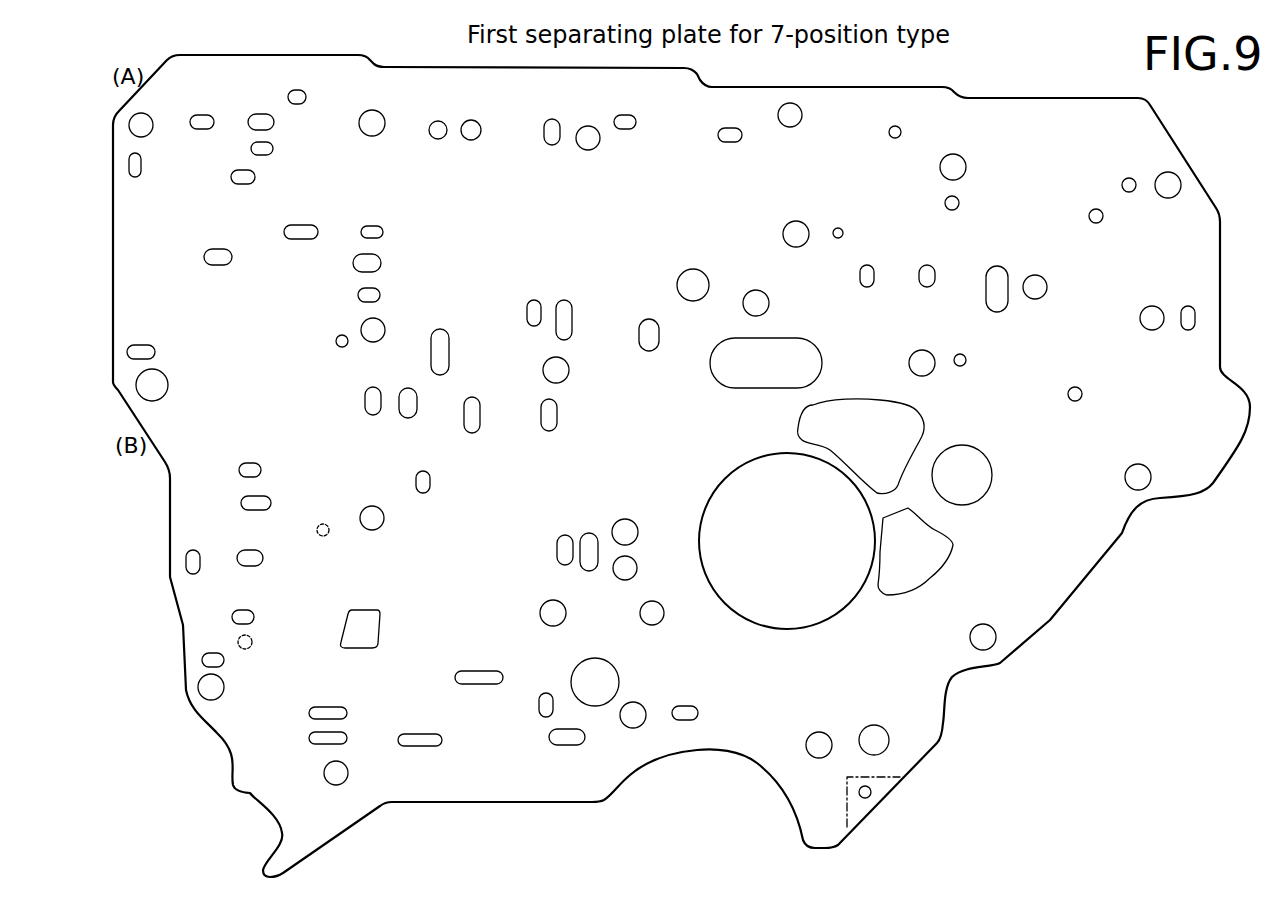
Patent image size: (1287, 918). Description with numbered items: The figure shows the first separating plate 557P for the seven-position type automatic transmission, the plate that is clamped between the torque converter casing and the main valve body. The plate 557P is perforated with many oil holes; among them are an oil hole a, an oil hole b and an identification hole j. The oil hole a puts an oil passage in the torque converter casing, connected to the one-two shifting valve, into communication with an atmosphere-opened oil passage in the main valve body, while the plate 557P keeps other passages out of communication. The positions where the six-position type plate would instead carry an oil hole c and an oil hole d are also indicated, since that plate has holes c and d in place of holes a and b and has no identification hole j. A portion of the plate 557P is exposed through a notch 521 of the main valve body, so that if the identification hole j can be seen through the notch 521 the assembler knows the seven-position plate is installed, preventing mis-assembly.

The first separating plate for 7-position type 557P is at (1094, 578).
The notch of the main valve body 521 is at (868, 800).
The identification hole j is at (871, 795).
The oil hole a is at (240, 608).
The oil hole b is at (212, 652).
The oil hole c is at (318, 524).
The oil hole d is at (255, 640).